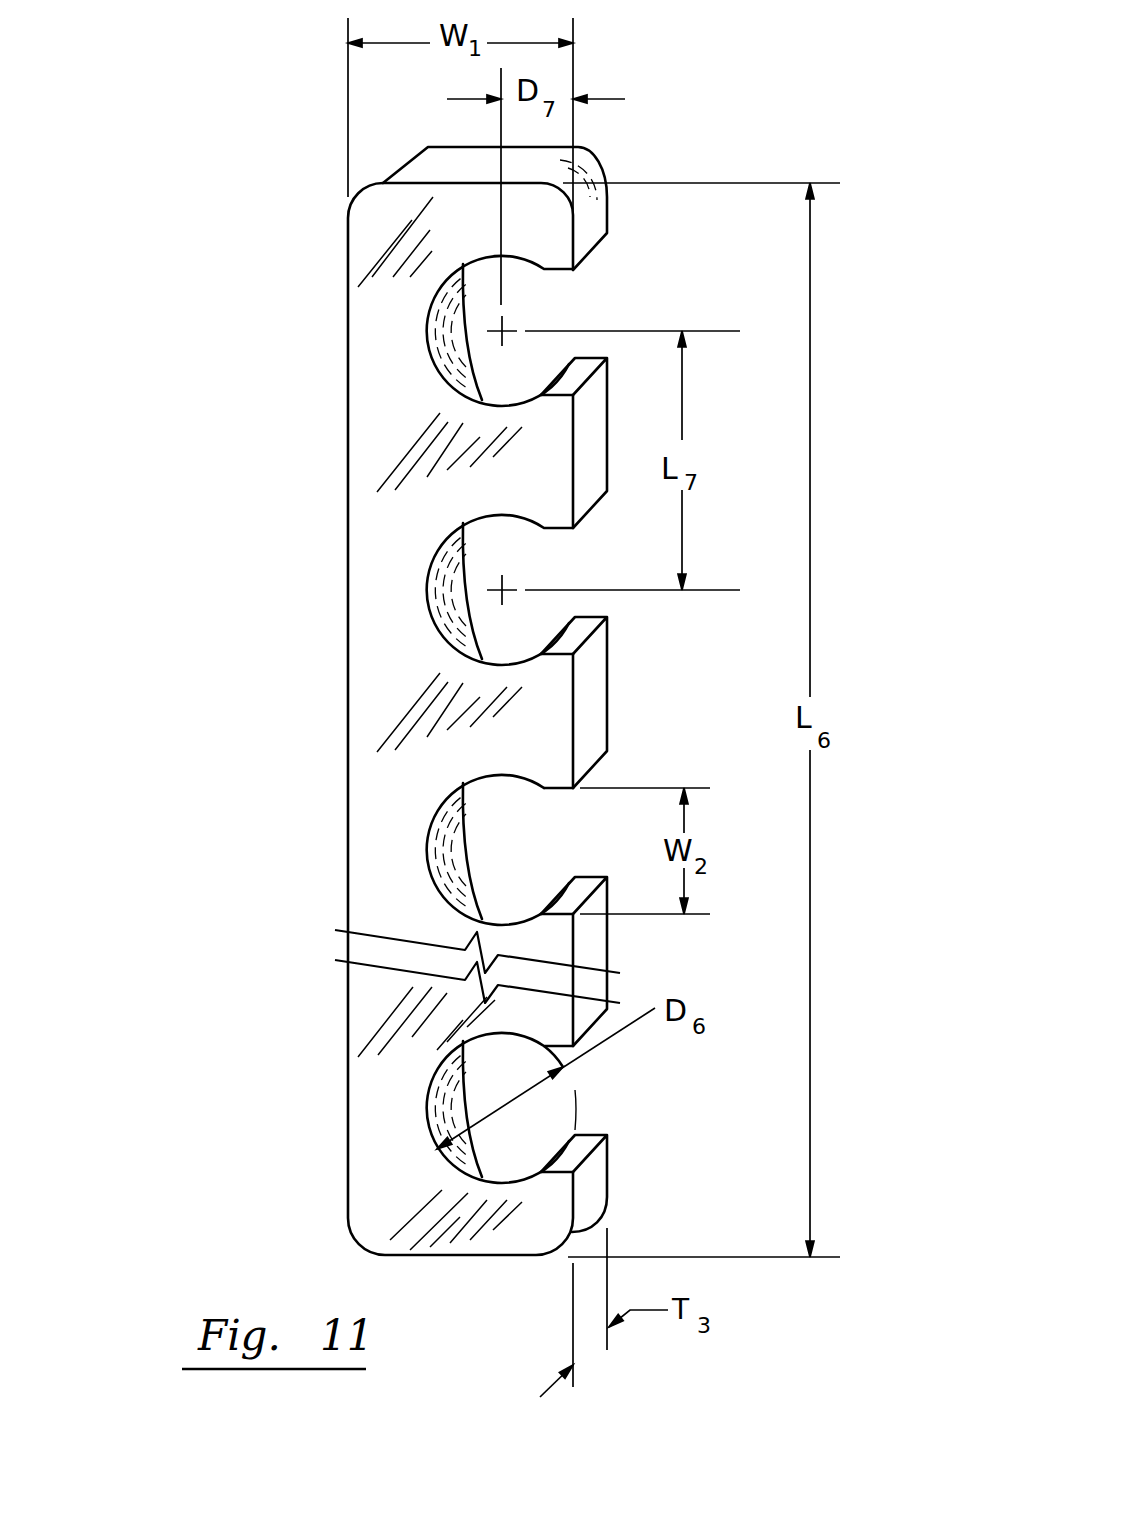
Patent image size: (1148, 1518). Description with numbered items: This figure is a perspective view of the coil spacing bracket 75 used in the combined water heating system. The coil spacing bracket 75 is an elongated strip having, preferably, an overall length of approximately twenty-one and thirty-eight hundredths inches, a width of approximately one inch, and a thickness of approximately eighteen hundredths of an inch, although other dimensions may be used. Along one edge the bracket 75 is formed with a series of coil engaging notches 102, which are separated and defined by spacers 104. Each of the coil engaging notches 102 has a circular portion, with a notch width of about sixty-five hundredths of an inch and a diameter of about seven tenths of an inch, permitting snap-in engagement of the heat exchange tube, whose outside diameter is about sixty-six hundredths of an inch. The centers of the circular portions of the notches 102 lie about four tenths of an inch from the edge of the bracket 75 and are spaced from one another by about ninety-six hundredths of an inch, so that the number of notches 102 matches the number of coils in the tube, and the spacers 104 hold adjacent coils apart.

The coil spacing bracket 75 is at (325, 645).
The coil engaging notches 102 is at (428, 845).
The spacers 104 is at (609, 700).